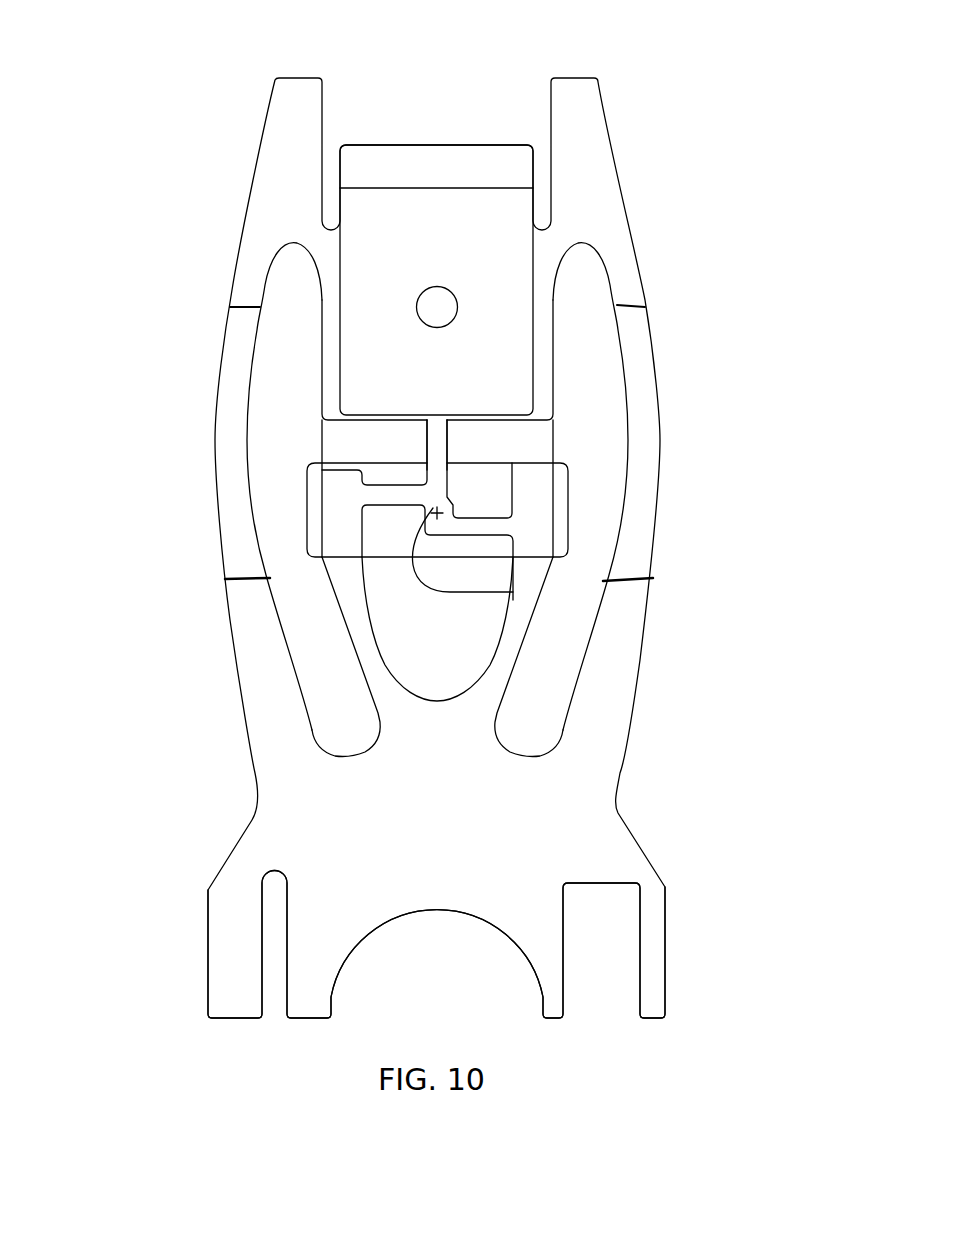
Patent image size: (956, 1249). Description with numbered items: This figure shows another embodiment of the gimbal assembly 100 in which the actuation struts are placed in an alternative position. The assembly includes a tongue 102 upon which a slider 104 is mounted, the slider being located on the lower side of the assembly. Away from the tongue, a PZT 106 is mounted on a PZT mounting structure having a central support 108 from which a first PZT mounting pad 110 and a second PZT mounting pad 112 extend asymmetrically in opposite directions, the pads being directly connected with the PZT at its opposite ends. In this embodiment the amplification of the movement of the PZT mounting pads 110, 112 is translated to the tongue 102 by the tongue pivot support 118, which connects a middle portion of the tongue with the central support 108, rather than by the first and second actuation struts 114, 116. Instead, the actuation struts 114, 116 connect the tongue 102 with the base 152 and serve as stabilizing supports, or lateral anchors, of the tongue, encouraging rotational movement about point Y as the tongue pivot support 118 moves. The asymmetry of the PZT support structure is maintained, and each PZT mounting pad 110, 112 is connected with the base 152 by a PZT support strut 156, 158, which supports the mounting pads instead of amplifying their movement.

The gimbal assembly 100 is at (453, 33).
The tongue 102 is at (550, 303).
The slider 104 is at (497, 219).
The PZT 106 is at (390, 520).
The central support 108 is at (433, 510).
The first PZT mounting pad 110 is at (333, 488).
The second PZT mounting pad 112 is at (523, 518).
The first actuation strut 114 is at (232, 378).
The second actuation strut 116 is at (637, 380).
The tongue pivot support 118 is at (430, 437).
The base 152 is at (535, 878).
The PZT support strut 156 is at (365, 657).
The PZT support strut 158 is at (495, 667).
The point Y is at (417, 302).